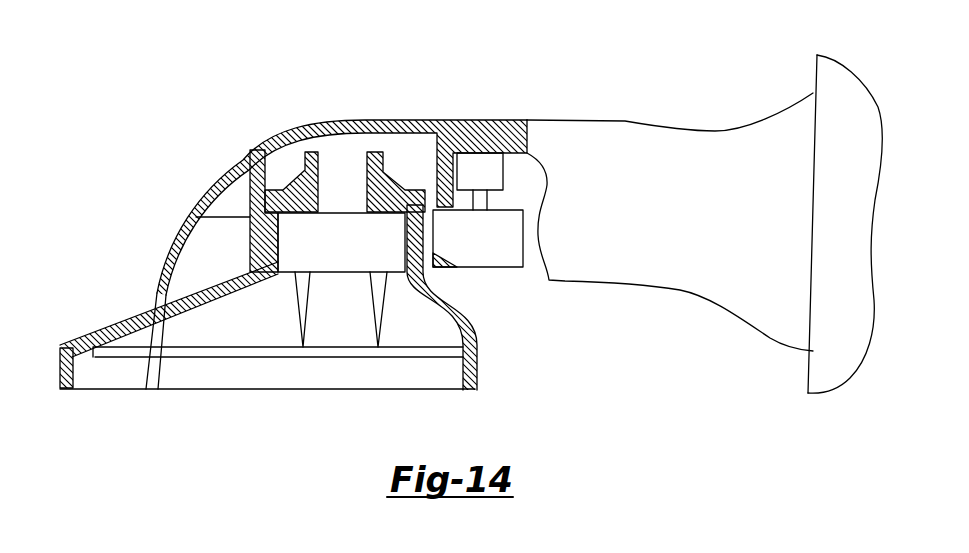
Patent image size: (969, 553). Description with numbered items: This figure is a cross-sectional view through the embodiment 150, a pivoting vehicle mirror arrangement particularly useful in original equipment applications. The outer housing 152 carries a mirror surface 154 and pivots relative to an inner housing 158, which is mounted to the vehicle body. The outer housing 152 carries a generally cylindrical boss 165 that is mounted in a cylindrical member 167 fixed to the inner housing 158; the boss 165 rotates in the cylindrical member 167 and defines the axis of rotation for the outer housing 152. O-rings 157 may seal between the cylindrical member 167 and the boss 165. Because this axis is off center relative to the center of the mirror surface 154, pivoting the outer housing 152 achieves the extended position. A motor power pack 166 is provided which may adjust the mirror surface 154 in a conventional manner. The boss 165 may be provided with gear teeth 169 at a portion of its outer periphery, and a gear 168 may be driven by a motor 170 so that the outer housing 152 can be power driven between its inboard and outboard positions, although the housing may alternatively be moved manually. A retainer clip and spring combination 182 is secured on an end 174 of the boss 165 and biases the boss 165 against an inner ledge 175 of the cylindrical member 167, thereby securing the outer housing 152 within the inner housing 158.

The embodiment 150 is at (597, 83).
The outer housing 152 is at (60, 386).
The mirror surface 154 is at (269, 358).
The O-rings 157 is at (250, 238).
The inner housing 158 is at (645, 133).
The boss 165 is at (250, 258).
The motor power pack 166 is at (357, 249).
The cylindrical member 167 is at (213, 178).
The gear 168 is at (492, 247).
The gear teeth 169 is at (450, 260).
The motor 170 is at (482, 170).
The end of the boss 174 is at (318, 178).
The inner ledge 175 is at (282, 188).
The retainer clip and spring combination 182 is at (283, 162).